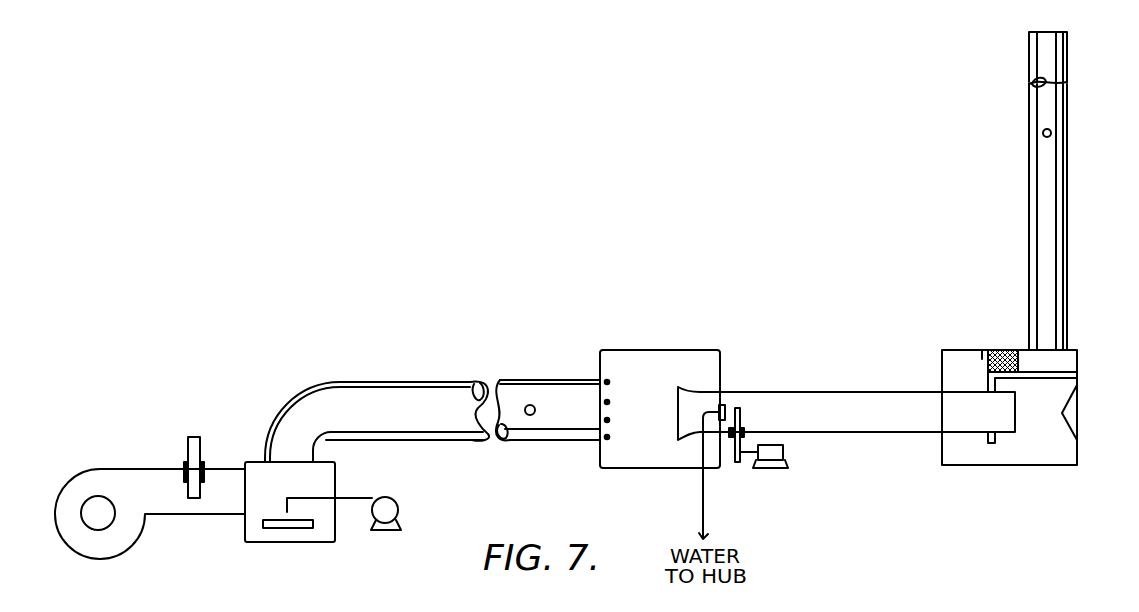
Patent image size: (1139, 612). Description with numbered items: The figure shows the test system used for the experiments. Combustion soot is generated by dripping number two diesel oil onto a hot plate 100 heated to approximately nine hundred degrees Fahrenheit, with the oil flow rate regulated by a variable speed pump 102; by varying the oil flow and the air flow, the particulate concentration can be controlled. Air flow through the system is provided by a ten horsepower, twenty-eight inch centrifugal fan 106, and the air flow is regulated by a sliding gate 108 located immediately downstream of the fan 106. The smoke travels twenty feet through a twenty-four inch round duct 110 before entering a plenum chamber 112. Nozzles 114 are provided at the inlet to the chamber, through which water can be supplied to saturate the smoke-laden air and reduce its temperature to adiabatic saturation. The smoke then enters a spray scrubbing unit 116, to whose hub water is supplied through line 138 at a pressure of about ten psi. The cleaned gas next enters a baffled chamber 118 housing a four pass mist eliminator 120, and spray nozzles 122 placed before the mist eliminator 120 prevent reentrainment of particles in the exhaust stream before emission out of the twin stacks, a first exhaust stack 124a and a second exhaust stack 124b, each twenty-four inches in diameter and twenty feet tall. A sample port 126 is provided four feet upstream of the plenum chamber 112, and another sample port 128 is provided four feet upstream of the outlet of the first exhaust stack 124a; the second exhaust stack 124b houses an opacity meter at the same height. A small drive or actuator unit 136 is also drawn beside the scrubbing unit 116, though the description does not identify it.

The hot plate 100 is at (266, 527).
The variable speed pump 102 is at (397, 507).
The centrifugal fan 106 is at (84, 473).
The sliding gate 108 is at (188, 452).
The round duct 110 is at (370, 382).
The plenum chamber 112 is at (663, 470).
The nozzles 114 is at (618, 399).
The spray scrubbing unit 116 is at (817, 392).
The baffled chamber 118 is at (1002, 467).
The mist eliminator 120 is at (1000, 350).
The spray nozzles 122 is at (980, 360).
The first exhaust stack 124a is at (1028, 128).
The second exhaust stack 124b is at (1030, 60).
The sample port 126 is at (530, 415).
The sample port 128 is at (1051, 133).
The valve actuator 136 is at (785, 455).
The water line 138 is at (705, 507).